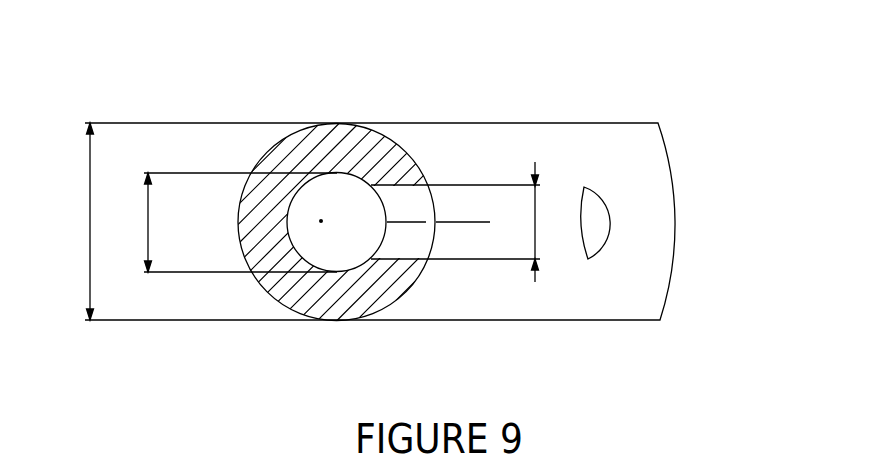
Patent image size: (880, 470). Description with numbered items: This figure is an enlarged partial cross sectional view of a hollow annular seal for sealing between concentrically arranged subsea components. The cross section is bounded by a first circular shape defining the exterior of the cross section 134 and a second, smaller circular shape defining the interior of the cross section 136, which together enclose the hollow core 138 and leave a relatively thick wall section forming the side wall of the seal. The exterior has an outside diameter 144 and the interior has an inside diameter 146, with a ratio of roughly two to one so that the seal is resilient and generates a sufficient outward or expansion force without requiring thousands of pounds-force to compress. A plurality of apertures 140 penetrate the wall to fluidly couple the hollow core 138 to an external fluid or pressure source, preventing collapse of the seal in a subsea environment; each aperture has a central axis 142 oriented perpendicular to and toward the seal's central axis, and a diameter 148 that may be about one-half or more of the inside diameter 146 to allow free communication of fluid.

The exterior of the cross section 134 is at (277, 135).
The interior of the cross section 136 is at (321, 221).
The hollow core 138 is at (312, 271).
The plurality of apertures 140 is at (426, 184).
The central axis 142 is at (460, 225).
The outside diameter 144 is at (73, 221).
The inside diameter 146 is at (223, 222).
The diameter 148 is at (552, 222).